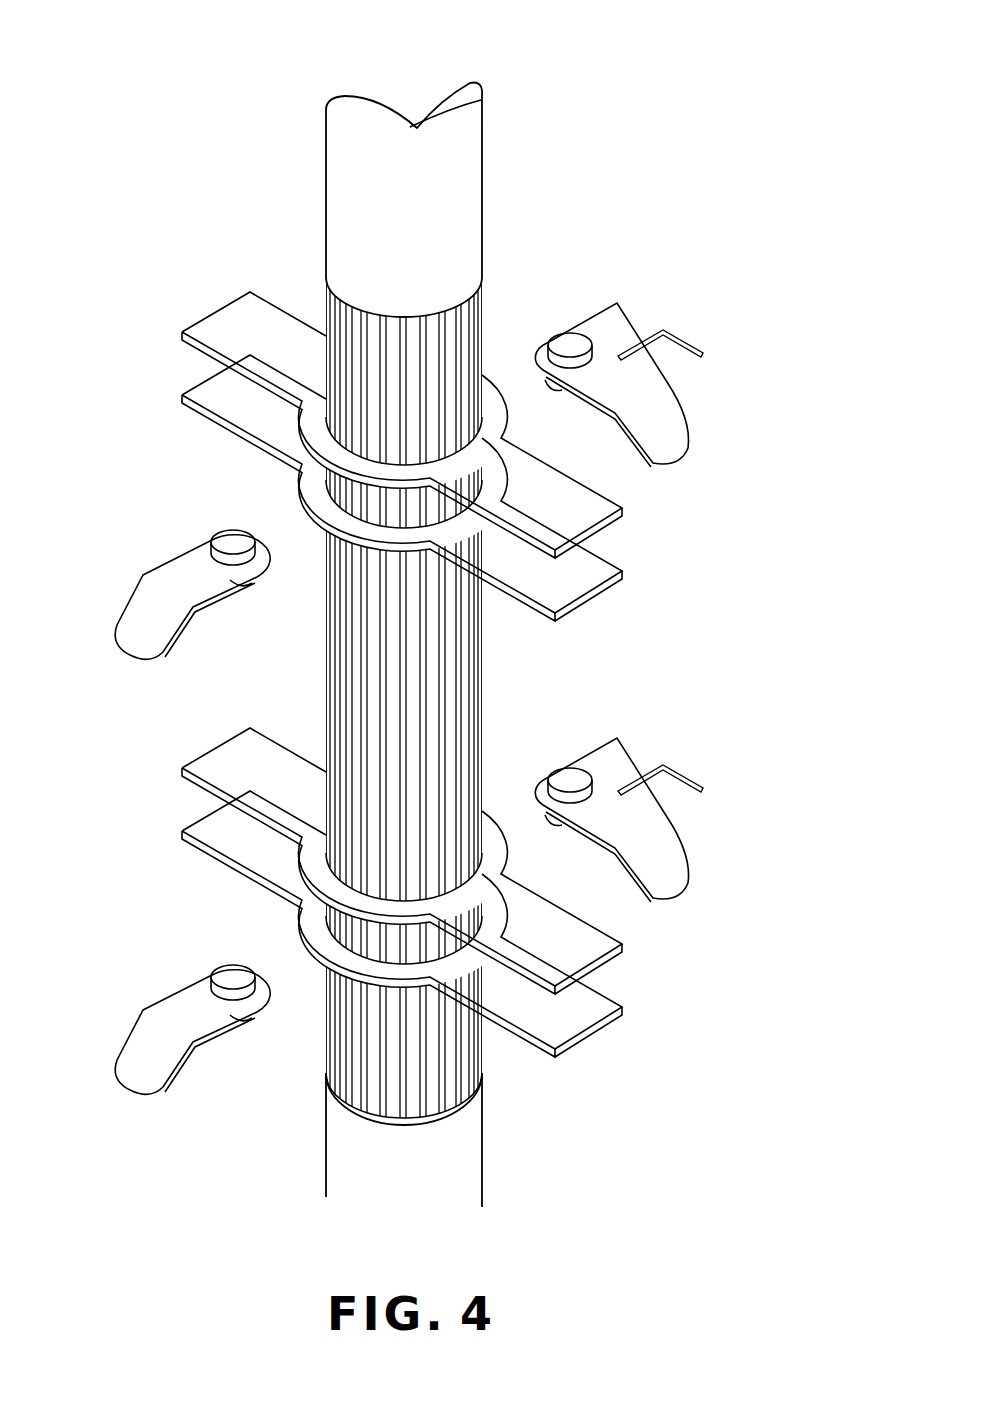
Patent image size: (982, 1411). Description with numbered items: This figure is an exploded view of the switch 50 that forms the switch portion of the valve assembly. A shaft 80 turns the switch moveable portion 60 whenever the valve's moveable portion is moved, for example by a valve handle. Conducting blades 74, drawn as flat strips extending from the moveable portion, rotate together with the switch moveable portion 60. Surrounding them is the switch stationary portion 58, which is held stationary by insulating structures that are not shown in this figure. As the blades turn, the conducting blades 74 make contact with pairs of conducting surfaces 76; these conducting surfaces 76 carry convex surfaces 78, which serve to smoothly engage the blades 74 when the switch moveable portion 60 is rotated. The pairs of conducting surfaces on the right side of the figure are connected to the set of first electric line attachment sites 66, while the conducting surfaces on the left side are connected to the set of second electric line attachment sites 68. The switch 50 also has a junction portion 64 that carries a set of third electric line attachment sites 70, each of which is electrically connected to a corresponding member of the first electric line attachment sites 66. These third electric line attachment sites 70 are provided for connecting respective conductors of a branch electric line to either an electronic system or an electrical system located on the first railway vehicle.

The switch 50 is at (423, 603).
The switch stationary portion 58 is at (748, 588).
The switch moveable portion 60 is at (468, 160).
The junction portion 64 is at (779, 958).
The first electric line attachment sites 66 is at (678, 450).
The second electric line attachment sites 68 is at (133, 617).
The third electric line attachment sites 70 is at (690, 333).
The conducting blades 74 is at (262, 318).
The conducting surfaces 76 is at (540, 352).
The convex surfaces 78 is at (570, 338).
The shaft 80 is at (340, 160).